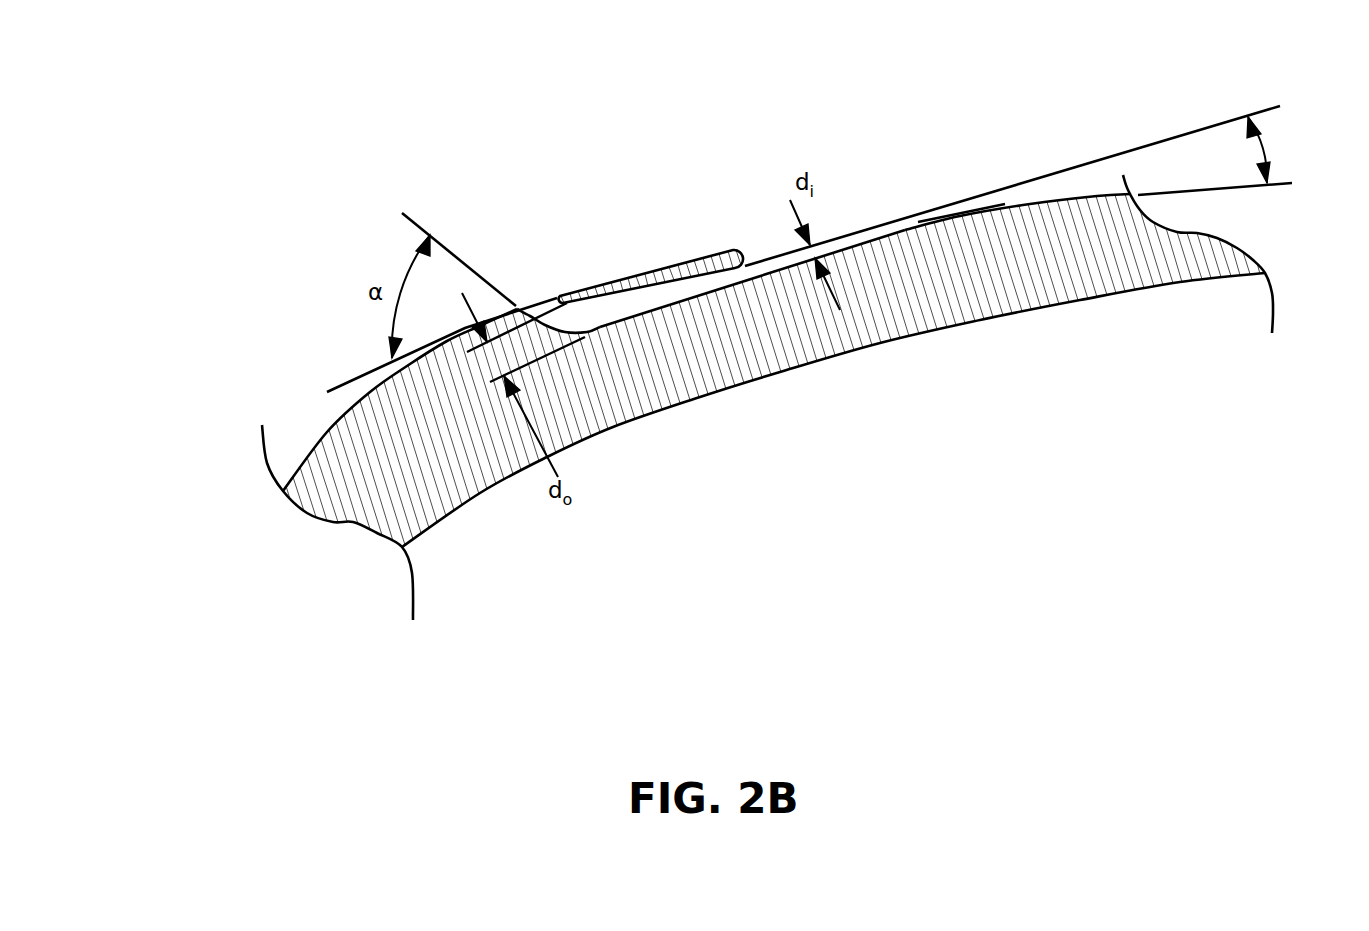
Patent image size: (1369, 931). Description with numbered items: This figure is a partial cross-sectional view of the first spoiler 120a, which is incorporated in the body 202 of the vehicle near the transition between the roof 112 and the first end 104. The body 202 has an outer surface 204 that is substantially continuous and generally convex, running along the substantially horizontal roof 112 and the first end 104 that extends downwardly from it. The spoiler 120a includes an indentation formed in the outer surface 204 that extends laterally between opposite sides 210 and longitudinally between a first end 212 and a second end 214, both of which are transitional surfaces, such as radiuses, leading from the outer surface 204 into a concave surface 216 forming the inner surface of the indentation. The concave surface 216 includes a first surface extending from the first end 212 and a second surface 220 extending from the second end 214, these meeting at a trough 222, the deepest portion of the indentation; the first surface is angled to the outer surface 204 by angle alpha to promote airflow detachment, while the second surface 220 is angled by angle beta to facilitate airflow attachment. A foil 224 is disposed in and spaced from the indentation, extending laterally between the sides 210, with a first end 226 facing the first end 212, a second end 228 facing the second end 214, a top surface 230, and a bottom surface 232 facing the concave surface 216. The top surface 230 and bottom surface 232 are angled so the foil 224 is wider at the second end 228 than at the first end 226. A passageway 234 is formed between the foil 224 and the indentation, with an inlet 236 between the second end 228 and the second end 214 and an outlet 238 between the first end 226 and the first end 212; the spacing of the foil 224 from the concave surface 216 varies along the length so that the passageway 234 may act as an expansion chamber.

The first end 104 is at (323, 491).
The roof 112 is at (1148, 233).
The first spoiler 120a is at (1133, 535).
The body 202 is at (767, 328).
The outer surface 204 is at (337, 423).
The sides 210 is at (728, 337).
The first end 212 is at (516, 295).
The second end 214 is at (958, 190).
The concave surface 216 is at (640, 290).
The second surface 220 is at (760, 280).
The trough 222 is at (582, 330).
The foil 224 is at (690, 235).
The first end 226 is at (555, 302).
The second end 228 is at (740, 262).
The top surface 230 is at (603, 288).
The bottom surface 232 is at (655, 305).
The passageway 234 is at (602, 330).
The inlet 236 is at (872, 207).
The outlet 238 is at (543, 290).